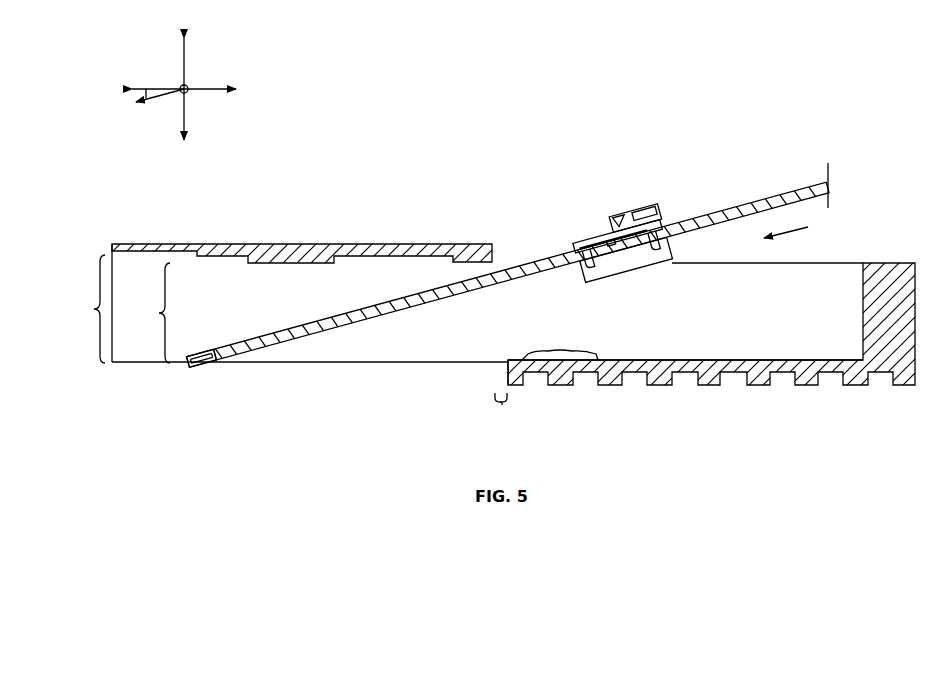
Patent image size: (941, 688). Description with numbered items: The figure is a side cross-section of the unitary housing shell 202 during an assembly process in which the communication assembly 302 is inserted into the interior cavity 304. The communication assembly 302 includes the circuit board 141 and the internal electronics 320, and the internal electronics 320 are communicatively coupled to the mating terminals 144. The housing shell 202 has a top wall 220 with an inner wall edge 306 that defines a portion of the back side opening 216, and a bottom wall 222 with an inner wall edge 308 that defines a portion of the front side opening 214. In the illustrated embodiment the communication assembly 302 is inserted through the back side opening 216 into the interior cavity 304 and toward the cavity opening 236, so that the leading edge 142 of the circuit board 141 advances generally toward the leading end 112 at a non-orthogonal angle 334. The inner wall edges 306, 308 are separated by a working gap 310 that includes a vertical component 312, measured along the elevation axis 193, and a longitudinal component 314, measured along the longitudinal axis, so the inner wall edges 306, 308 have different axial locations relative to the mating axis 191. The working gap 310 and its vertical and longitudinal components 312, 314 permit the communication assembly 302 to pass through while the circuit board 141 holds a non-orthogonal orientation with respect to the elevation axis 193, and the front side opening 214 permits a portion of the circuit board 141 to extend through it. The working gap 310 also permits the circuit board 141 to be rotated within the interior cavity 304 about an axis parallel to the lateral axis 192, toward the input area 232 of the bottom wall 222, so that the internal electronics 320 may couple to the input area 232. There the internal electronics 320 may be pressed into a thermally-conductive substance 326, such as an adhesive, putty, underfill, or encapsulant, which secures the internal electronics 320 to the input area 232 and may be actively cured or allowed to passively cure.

The mating axis 191 is at (220, 84).
The lateral axis 192 is at (180, 85).
The elevation axis 193 is at (184, 56).
The non-orthogonal angle 334 is at (128, 101).
The housing shell 202 is at (262, 222).
The top wall 220 is at (378, 244).
The inner wall edge 306 is at (493, 256).
The circuit board 141 is at (553, 254).
The internal electronics 320 is at (594, 231).
The communication assembly 302 is at (778, 180).
The back side opening 216 is at (837, 266).
The cavity opening 236 is at (79, 309).
The vertical component 312 is at (145, 313).
The mating terminals 144 is at (200, 354).
The interior cavity 304 is at (293, 292).
The leading end 112 is at (88, 341).
The leading edge 142 is at (186, 366).
The front side opening 214 is at (286, 364).
The working gap 310 is at (480, 324).
The inner wall edge 308 is at (506, 366).
The thermally-conductive substance 326 is at (558, 352).
The input area 232 is at (584, 357).
The longitudinal component 314 is at (499, 408).
The bottom wall 222 is at (685, 371).